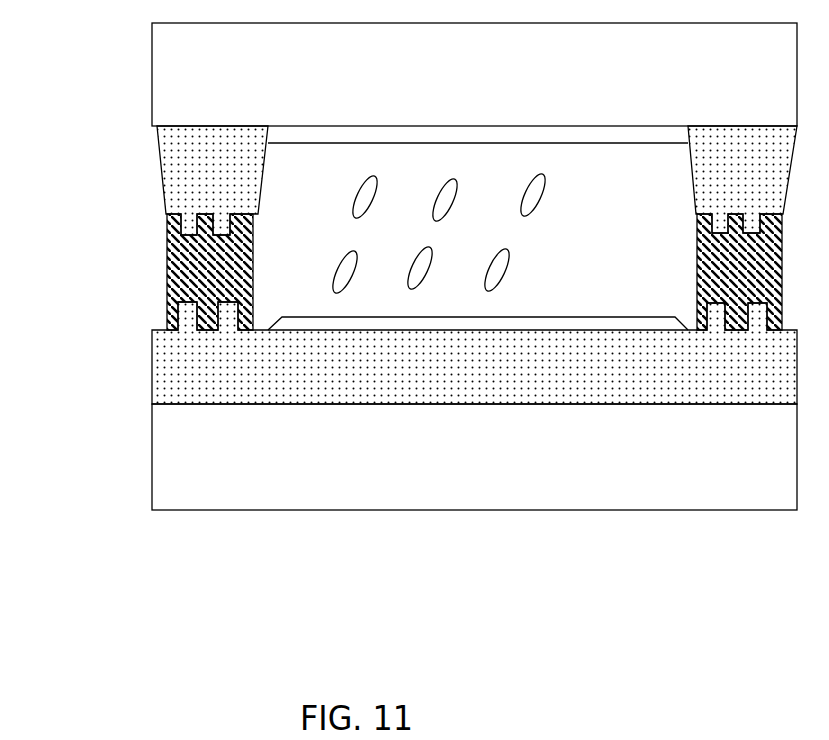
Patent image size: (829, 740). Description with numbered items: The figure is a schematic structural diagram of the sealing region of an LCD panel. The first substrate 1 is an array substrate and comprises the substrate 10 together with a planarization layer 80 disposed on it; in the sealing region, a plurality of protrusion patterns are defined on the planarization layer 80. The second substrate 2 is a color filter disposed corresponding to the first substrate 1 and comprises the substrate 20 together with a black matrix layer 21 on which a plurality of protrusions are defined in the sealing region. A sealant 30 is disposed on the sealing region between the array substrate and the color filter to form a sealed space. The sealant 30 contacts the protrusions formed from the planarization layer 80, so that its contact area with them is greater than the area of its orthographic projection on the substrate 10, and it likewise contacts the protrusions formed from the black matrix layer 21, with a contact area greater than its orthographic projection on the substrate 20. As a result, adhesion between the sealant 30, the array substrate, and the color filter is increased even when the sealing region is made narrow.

The first substrate 1 is at (410, 475).
The second substrate 2 is at (410, 335).
The substrate 10 is at (181, 466).
The substrate 20 is at (182, 81).
The black matrix layer 21 is at (160, 160).
The sealant 30 is at (167, 265).
The planarization layer 80 is at (152, 385).